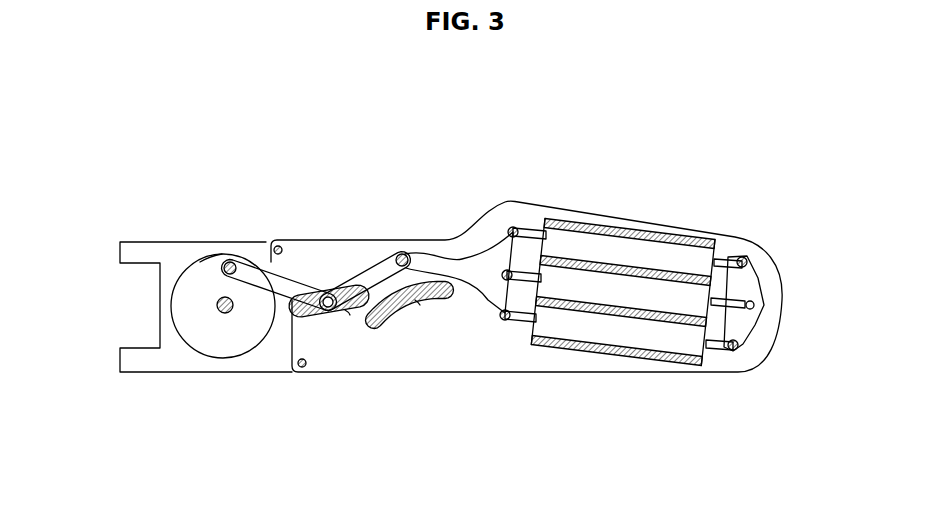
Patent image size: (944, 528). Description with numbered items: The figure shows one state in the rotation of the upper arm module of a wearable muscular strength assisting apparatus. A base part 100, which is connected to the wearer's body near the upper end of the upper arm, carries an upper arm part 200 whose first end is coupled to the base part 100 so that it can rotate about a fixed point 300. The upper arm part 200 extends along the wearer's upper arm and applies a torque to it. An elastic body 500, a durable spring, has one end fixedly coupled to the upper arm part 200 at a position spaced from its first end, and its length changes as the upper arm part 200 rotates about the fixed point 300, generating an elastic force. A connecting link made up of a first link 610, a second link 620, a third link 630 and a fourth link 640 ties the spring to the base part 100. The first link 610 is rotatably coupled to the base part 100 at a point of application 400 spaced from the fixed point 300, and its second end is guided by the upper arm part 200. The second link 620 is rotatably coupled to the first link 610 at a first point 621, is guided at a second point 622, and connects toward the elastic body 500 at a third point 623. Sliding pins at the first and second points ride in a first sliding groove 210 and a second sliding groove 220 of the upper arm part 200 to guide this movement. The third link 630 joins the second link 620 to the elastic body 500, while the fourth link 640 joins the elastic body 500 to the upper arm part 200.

The base part 100 is at (145, 367).
The upper arm part 200 is at (508, 357).
The first sliding groove 210 is at (348, 313).
The second sliding groove 220 is at (418, 303).
The fixed point 300 is at (226, 313).
The point of application 400 is at (200, 262).
The elastic body 500 is at (652, 240).
The first link 610 is at (260, 253).
The second link 620 is at (370, 273).
The first point 621 is at (328, 308).
The second point 622 is at (421, 301).
The third point 623 is at (397, 253).
The third link 630 is at (440, 243).
The fourth link 640 is at (744, 325).